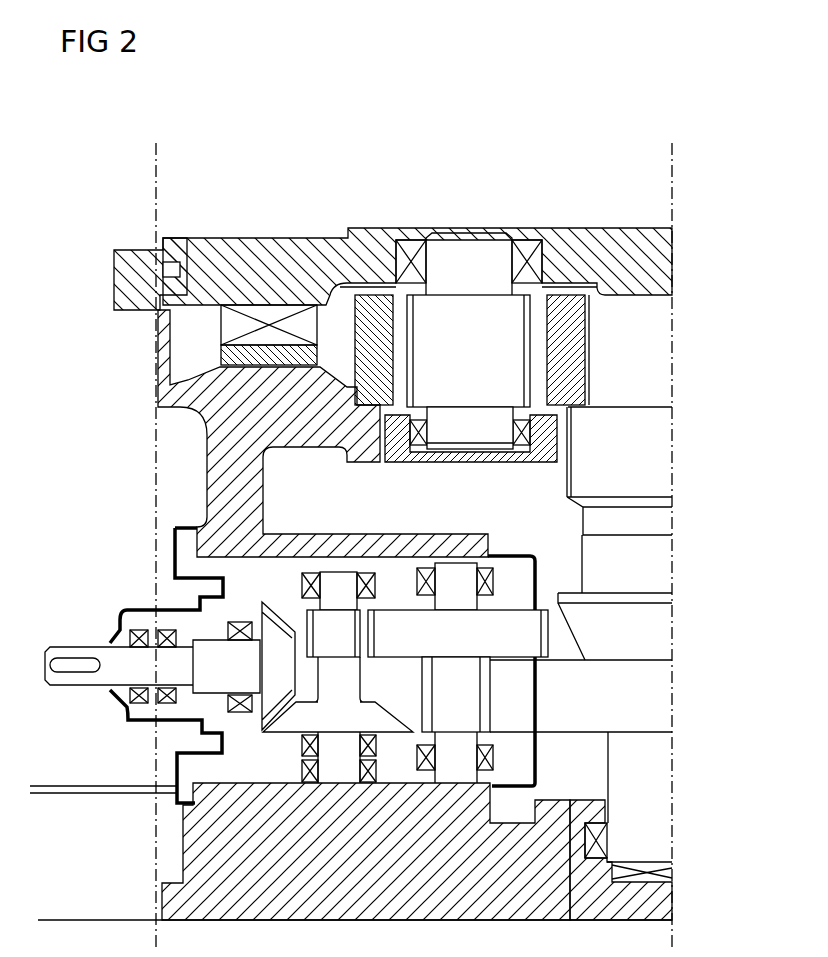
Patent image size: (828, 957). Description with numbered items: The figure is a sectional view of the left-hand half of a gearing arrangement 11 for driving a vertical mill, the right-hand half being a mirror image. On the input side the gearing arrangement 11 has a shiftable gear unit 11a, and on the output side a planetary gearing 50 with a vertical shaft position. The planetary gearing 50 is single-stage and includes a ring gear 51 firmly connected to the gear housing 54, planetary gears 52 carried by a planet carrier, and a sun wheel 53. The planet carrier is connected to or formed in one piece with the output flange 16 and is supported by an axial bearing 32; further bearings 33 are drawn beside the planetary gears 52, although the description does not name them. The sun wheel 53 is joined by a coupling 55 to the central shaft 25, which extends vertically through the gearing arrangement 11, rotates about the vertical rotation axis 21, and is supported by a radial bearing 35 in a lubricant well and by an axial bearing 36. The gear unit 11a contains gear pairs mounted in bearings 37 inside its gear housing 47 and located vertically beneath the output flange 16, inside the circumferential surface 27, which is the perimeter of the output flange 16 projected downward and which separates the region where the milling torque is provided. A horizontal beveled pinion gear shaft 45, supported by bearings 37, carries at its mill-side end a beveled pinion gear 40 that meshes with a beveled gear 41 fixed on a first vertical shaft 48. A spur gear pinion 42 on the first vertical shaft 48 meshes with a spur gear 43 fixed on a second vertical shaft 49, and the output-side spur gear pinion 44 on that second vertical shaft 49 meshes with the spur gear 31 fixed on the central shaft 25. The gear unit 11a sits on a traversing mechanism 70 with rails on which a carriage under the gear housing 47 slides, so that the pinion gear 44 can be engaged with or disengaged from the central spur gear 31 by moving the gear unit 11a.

The gearing arrangement 11 is at (99, 216).
The shiftable gear unit 11a is at (118, 560).
The output flange 16 is at (275, 246).
The vertical rotation axis 21 is at (673, 158).
The central shaft 25 is at (653, 780).
The circumferential surface 27 is at (157, 158).
The spur gear 31 is at (653, 701).
The axial bearing 32 is at (230, 326).
The bearing 33 is at (412, 246).
The radial bearing 35 is at (612, 840).
The axial bearing 36 is at (640, 868).
The bearings 37 is at (300, 583).
The beveled pinion gear 40 is at (294, 672).
The beveled gear 41 is at (349, 725).
The spur gear pinion 42 is at (347, 645).
The spur gear 43 is at (469, 645).
The spur gear pinion 44 is at (469, 705).
The beveled pinion gear shaft 45 is at (60, 650).
The gear housing 47 is at (175, 530).
The first vertical shaft 48 is at (340, 786).
The second vertical shaft 49 is at (457, 786).
The planetary gearing 50 is at (652, 324).
The ring gear 51 is at (372, 345).
The planetary gears 52 is at (442, 361).
The sun wheel 53 is at (565, 345).
The gear housing 54 is at (215, 420).
The coupling 55 is at (653, 568).
The traversing mechanism 70 is at (60, 784).